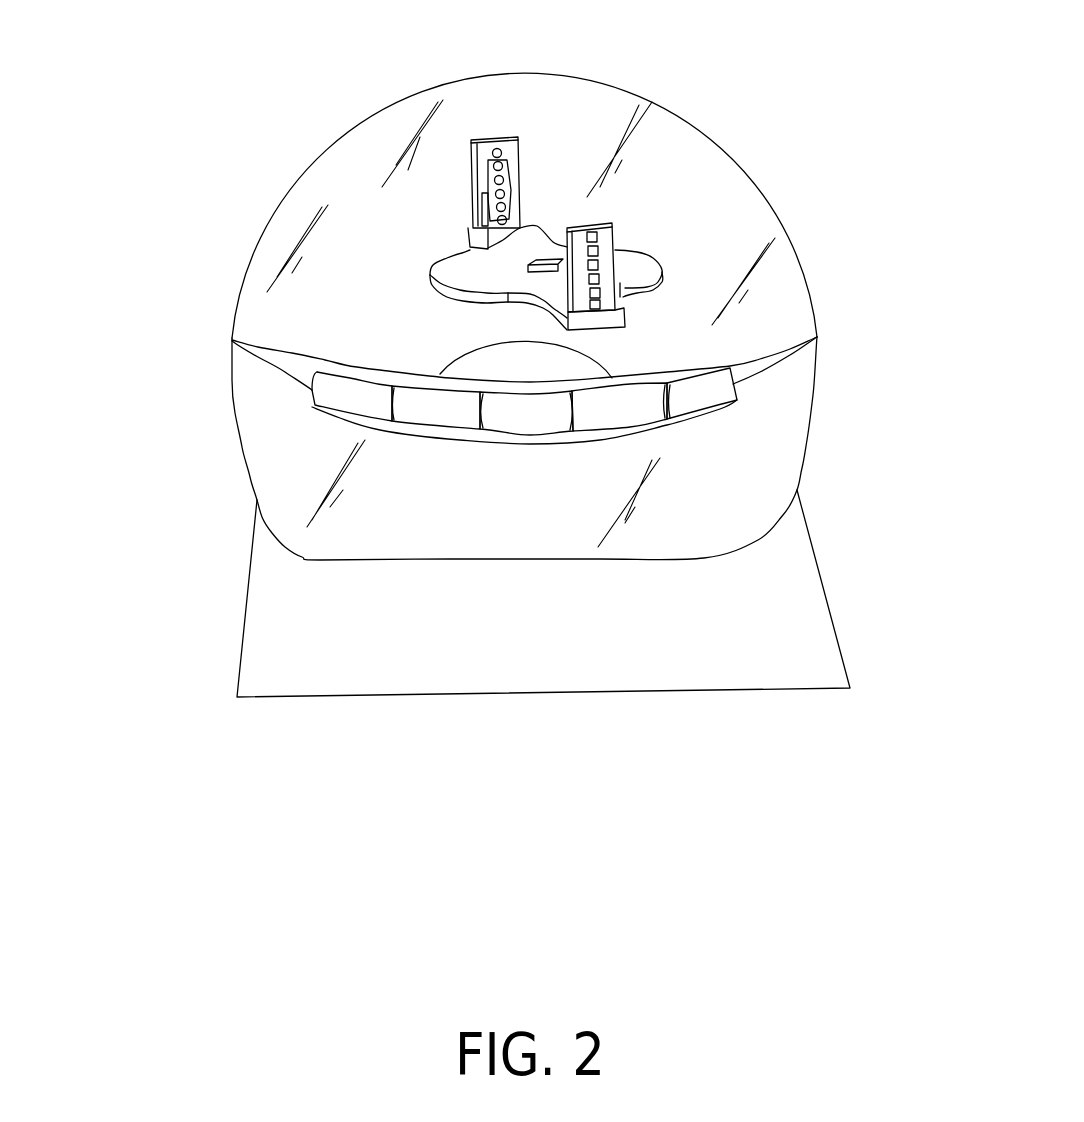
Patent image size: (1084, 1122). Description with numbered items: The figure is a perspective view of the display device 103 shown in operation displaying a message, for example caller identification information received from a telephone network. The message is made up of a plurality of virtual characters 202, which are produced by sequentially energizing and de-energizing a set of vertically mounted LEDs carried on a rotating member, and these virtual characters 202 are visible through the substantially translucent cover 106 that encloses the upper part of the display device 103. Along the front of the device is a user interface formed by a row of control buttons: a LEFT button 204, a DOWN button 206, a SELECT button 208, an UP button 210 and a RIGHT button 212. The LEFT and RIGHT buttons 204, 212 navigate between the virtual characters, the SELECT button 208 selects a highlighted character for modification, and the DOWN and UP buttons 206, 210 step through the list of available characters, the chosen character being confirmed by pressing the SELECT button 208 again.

The substantially translucent cover 106 is at (707, 133).
The display device 103 is at (373, 658).
The virtual characters 202 is at (473, 110).
The LEFT button 204 is at (340, 405).
The DOWN button 206 is at (423, 430).
The SELECT button 208 is at (513, 425).
The UP button 210 is at (645, 412).
The RIGHT button 212 is at (717, 400).